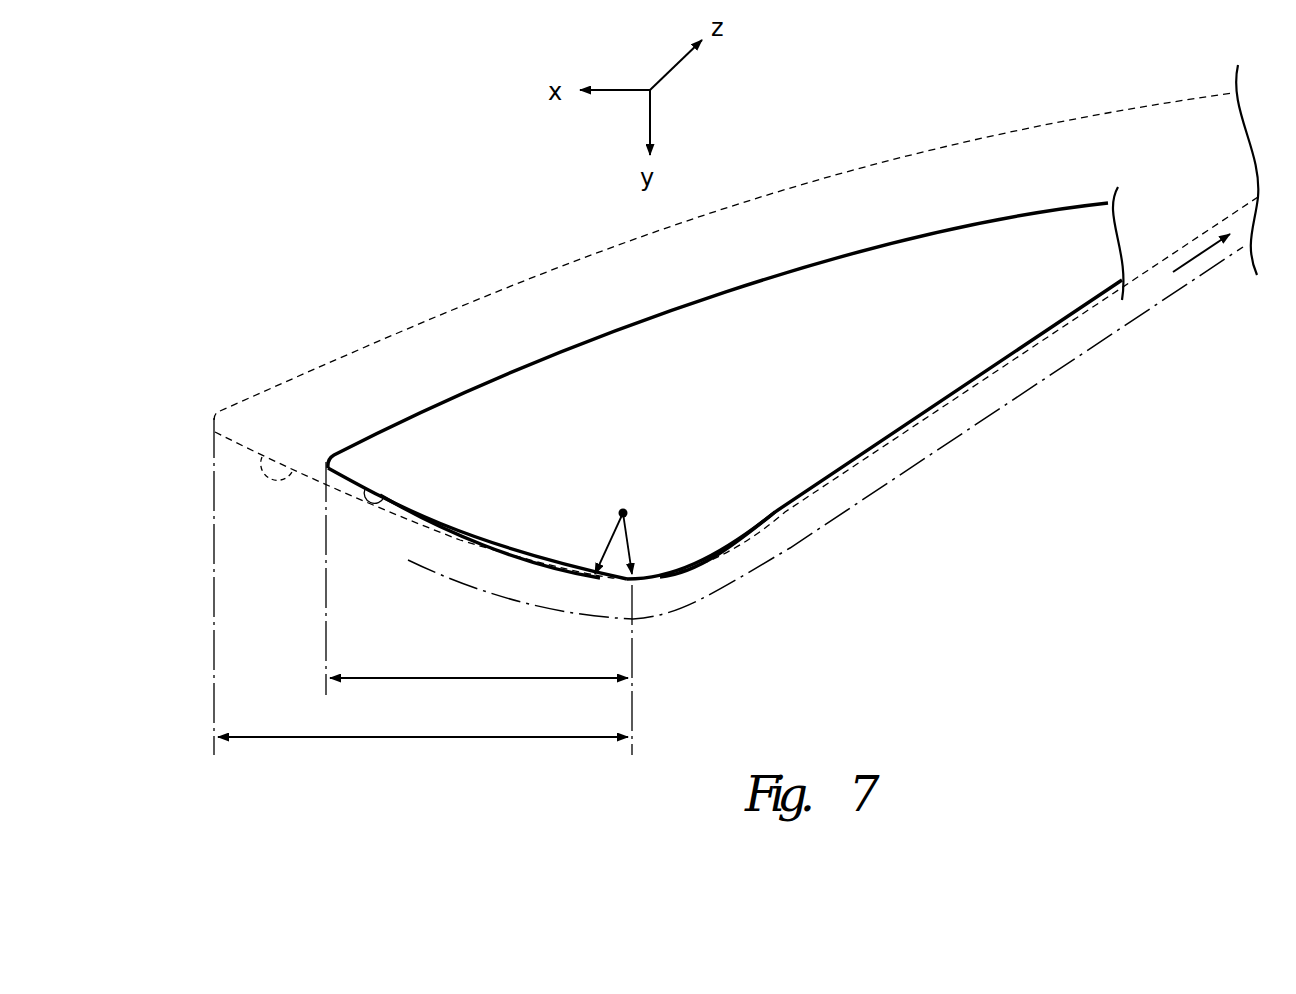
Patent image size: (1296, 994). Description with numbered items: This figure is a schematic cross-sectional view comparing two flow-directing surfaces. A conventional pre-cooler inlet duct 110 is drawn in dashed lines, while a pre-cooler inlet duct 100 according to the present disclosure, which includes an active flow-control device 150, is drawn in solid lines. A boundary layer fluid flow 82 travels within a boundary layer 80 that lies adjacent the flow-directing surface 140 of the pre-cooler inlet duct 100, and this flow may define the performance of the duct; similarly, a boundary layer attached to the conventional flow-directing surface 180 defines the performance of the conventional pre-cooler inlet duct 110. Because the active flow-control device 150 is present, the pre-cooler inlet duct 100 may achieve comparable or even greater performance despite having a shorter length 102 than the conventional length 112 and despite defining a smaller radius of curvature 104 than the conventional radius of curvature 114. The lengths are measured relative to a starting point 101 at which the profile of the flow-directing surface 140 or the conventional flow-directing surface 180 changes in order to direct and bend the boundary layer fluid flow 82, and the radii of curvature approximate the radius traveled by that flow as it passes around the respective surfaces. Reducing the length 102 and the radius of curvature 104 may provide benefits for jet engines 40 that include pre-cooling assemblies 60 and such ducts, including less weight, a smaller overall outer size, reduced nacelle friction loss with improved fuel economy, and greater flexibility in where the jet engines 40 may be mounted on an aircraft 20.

The aircraft 20 is at (303, 130).
The jet engine 40 is at (298, 178).
The pre-cooling assembly 60 is at (295, 206).
The boundary layer 80 is at (1083, 355).
The boundary layer fluid flow 82 is at (1187, 267).
The pre-cooler inlet duct 100 is at (403, 605).
The starting point 101 is at (649, 586).
The length 102 is at (510, 678).
The radius of curvature 104 is at (628, 540).
The conventional pre-cooler inlet duct 110 is at (255, 502).
The conventional length 112 is at (468, 737).
The conventional radius of curvature 114 is at (606, 539).
The flow-directing surface 140 is at (384, 494).
The active flow-control device 150 is at (466, 528).
The conventional flow-directing surface 180 is at (292, 468).